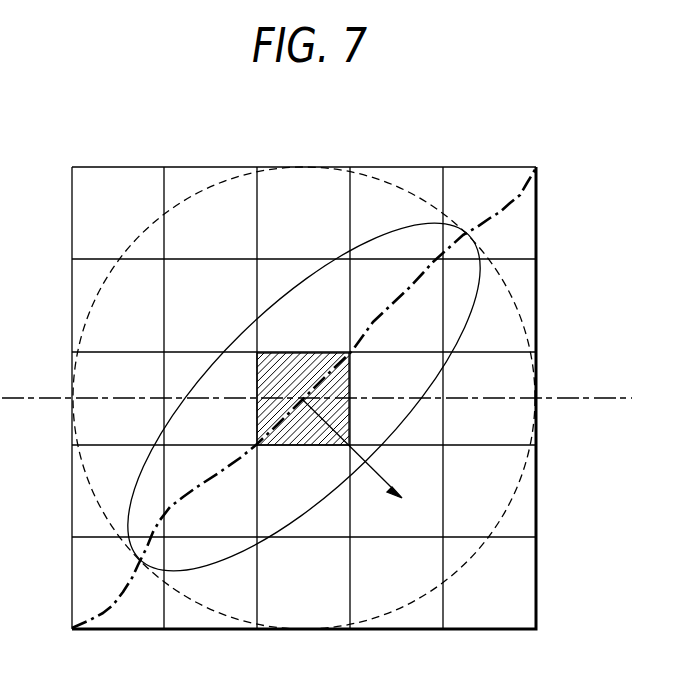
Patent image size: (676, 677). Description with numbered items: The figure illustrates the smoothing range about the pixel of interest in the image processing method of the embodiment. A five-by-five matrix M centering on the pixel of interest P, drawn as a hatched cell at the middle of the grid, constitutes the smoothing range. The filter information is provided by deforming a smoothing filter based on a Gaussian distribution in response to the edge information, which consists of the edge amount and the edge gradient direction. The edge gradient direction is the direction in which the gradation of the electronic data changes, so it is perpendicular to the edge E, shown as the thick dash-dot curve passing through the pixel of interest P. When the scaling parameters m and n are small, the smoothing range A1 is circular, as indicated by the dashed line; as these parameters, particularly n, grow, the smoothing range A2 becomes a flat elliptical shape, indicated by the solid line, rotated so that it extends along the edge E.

The pixel of interest P is at (300, 352).
The smoothing range A1 is at (420, 198).
The smoothing range A2 is at (388, 231).
The edge E is at (537, 232).
The matrix M is at (538, 514).